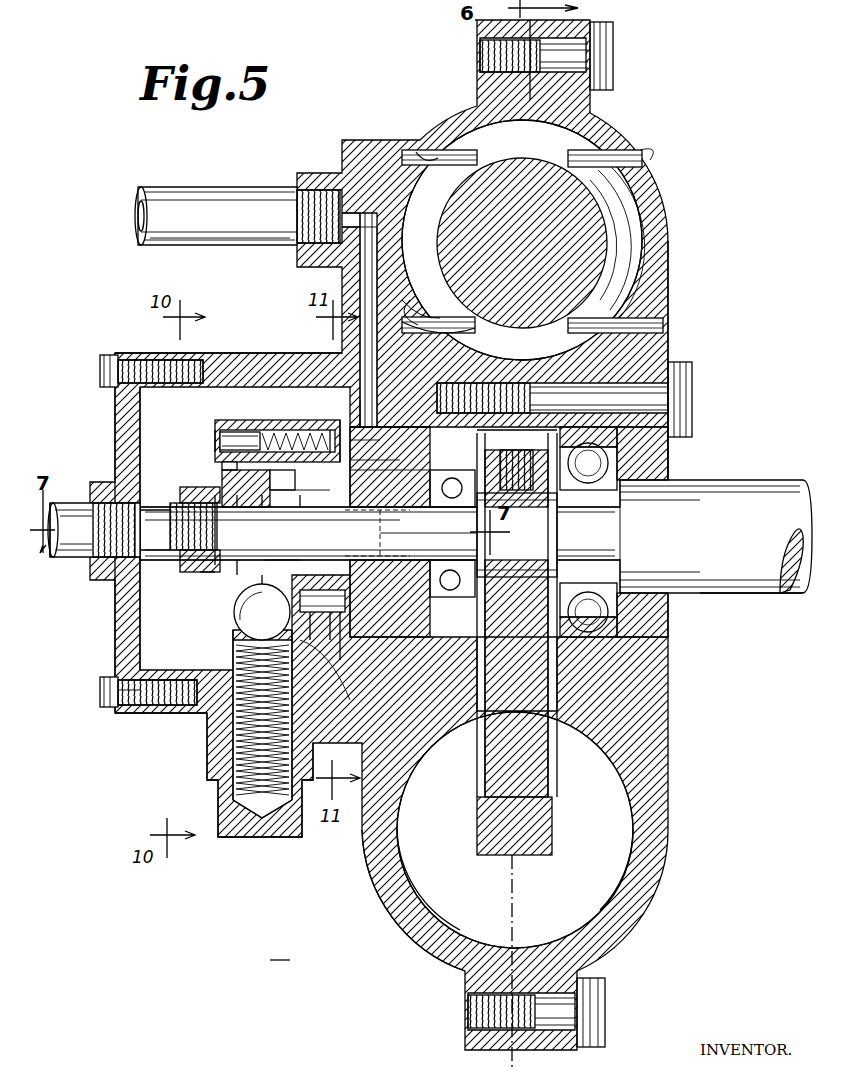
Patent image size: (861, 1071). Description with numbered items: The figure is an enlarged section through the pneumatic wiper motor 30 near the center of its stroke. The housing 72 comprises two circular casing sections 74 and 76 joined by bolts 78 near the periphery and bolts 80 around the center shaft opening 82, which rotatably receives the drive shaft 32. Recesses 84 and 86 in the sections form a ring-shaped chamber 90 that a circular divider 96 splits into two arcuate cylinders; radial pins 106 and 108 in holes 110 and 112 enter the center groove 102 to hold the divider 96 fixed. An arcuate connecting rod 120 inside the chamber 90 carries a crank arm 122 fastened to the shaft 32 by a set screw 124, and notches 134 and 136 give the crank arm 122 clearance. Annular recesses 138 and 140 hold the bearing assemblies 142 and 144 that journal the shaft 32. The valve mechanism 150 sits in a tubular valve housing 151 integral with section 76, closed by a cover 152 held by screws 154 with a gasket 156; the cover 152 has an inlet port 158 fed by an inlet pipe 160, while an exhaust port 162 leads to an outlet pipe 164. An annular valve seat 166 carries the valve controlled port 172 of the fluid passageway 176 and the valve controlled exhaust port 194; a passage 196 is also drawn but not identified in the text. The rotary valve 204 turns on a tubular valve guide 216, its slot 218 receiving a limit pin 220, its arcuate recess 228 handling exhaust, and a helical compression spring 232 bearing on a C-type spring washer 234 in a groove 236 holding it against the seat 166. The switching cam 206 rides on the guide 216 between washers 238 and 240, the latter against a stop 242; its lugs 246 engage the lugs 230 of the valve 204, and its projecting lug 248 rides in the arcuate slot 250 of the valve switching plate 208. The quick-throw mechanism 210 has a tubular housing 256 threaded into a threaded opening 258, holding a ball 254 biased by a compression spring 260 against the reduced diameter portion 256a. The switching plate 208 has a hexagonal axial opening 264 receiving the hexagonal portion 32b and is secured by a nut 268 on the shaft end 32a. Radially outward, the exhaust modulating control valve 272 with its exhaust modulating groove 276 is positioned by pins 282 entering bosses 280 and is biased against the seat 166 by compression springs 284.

The wiper motor 30 is at (281, 952).
The drive shaft 32 is at (745, 597).
The end of drive shaft 32a is at (180, 505).
The hexagonally-shaped portion of drive shaft 32b is at (185, 562).
The housing 72 is at (612, 128).
The casing section 74 is at (668, 285).
The casing section 76 is at (380, 895).
The bolts 78 is at (613, 44).
The bolts 80 is at (692, 382).
The center shaft opening 82 is at (672, 486).
The circular recess 84 is at (628, 812).
The circular recess 86 is at (445, 908).
The ring-shaped chamber 90 is at (515, 830).
The divider 96 is at (608, 242).
The center groove 102 is at (622, 207).
The pins 106 is at (642, 158).
The pins 108 is at (428, 150).
The holes 110 is at (630, 150).
The holes 112 is at (412, 152).
The arcuate connecting rod 120 is at (477, 832).
The crank arm 122 is at (497, 752).
The set screw 124 is at (522, 490).
The notch 134 is at (556, 688).
The notch 136 is at (478, 683).
The annular recess 138 is at (640, 440).
The annular recess 140 is at (435, 592).
The bearing assembly 142 is at (605, 625).
The bearing assembly 144 is at (452, 498).
The valve mechanism 150 is at (132, 611).
The valve housing 151 is at (160, 712).
The cover 152 is at (115, 645).
The screws 154 is at (100, 368).
The gasket 156 is at (138, 708).
The inlet port 158 is at (80, 490).
The inlet pipe 160 is at (80, 557).
The exhaust port 162 is at (295, 185).
The outlet pipe 164 is at (185, 190).
The annular valve seat 166 is at (340, 420).
The valve controlled port 172 is at (355, 537).
The fluid passageway 176 is at (375, 460).
The valve controlled exhaust port 194 is at (355, 420).
The passage 196 is at (360, 282).
The rotary valve 204 is at (355, 450).
The switching cam 206 is at (215, 485).
The valve switching plate 208 is at (232, 420).
The quick-throw mechanism 210 is at (244, 840).
The valve guide 216 is at (245, 505).
The motion limiting slot 218 is at (345, 605).
The limit pin 220 is at (345, 600).
The arcuate recess 228 is at (360, 470).
The lugs 230 is at (330, 615).
The helical compression spring 232 is at (305, 505).
The C-type spring washer 234 is at (285, 492).
The groove 236 is at (270, 510).
The washer 238 is at (272, 485).
The washer 240 is at (265, 575).
The stop 242 is at (237, 585).
The lugs 246 is at (340, 640).
The projecting lug 248 is at (222, 465).
The arcuate slot 250 is at (228, 432).
The ball 254 is at (262, 590).
The tubular housing 256 is at (232, 655).
The reduced diameter portion 256a is at (250, 600).
The threaded opening 258 is at (233, 715).
The compression spring 260 is at (268, 818).
The hexagonal axial opening 264 is at (210, 505).
The nut 268 is at (215, 574).
The exhaust modulating control valve 272 is at (320, 660).
The exhaust modulating groove 276 is at (362, 400).
The bosses 280 is at (300, 420).
The pins 282 is at (218, 420).
The compression springs 284 is at (305, 420).